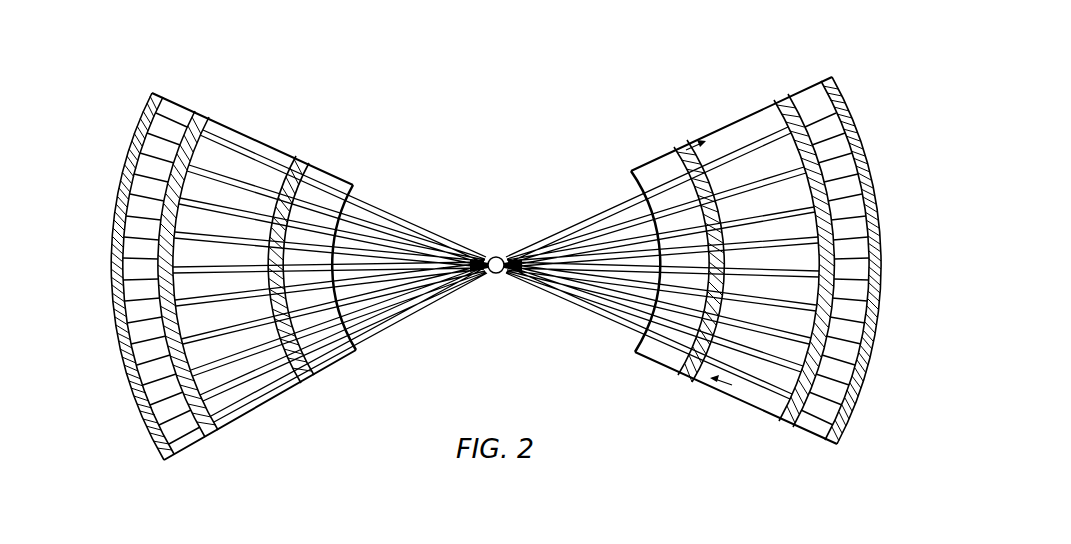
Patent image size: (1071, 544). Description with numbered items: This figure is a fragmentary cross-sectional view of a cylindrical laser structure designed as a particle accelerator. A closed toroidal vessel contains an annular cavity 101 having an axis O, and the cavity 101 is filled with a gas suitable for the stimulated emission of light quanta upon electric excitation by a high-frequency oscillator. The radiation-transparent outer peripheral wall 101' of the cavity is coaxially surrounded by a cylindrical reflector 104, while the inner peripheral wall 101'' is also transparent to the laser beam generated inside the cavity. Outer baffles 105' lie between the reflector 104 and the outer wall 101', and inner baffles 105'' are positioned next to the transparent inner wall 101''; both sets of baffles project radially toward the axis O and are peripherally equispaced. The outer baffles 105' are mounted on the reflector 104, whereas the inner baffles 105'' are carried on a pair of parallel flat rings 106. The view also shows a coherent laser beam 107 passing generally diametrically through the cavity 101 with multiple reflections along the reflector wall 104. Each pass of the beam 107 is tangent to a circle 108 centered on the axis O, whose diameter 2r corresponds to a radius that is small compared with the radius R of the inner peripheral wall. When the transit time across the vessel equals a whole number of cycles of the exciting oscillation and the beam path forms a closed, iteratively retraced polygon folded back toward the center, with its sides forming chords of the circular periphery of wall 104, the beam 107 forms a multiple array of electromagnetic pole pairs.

The annular cavity 101 is at (254, 301).
The outer peripheral wall 101' is at (198, 248).
The inner peripheral wall 101'' is at (286, 236).
The cylindrical reflector 104 is at (112, 252).
The outer baffles 105' is at (150, 253).
The inner baffles 105'' is at (330, 278).
The parallel flat rings 106 is at (329, 178).
The coherent laser beam 107 is at (615, 327).
The circle 108 is at (489, 250).
The axis O is at (498, 258).
The diameter of circle 2r is at (495, 228).
The radius of inner peripheral wall R is at (536, 235).